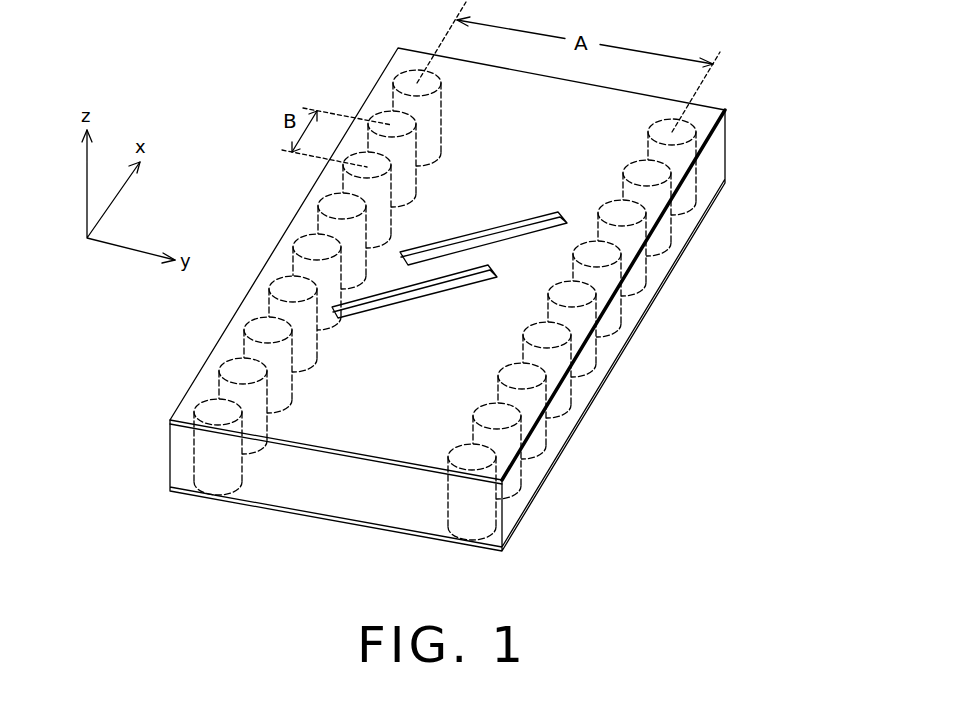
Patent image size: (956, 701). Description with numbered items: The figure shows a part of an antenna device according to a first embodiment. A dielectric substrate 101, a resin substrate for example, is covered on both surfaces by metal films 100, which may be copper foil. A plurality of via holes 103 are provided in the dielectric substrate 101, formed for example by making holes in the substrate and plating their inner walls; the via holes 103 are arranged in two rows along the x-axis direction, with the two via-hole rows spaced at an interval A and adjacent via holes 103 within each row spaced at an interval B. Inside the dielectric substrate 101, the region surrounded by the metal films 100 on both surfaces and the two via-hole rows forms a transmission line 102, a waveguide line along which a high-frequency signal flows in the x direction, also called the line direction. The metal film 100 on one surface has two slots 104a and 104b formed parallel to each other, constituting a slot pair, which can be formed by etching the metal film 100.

The metal film 100 is at (463, 323).
The dielectric substrate 101 is at (727, 148).
The transmission line 102 is at (303, 485).
The via hole 103 is at (542, 442).
The slot 104a is at (485, 233).
The slot 104b is at (413, 297).